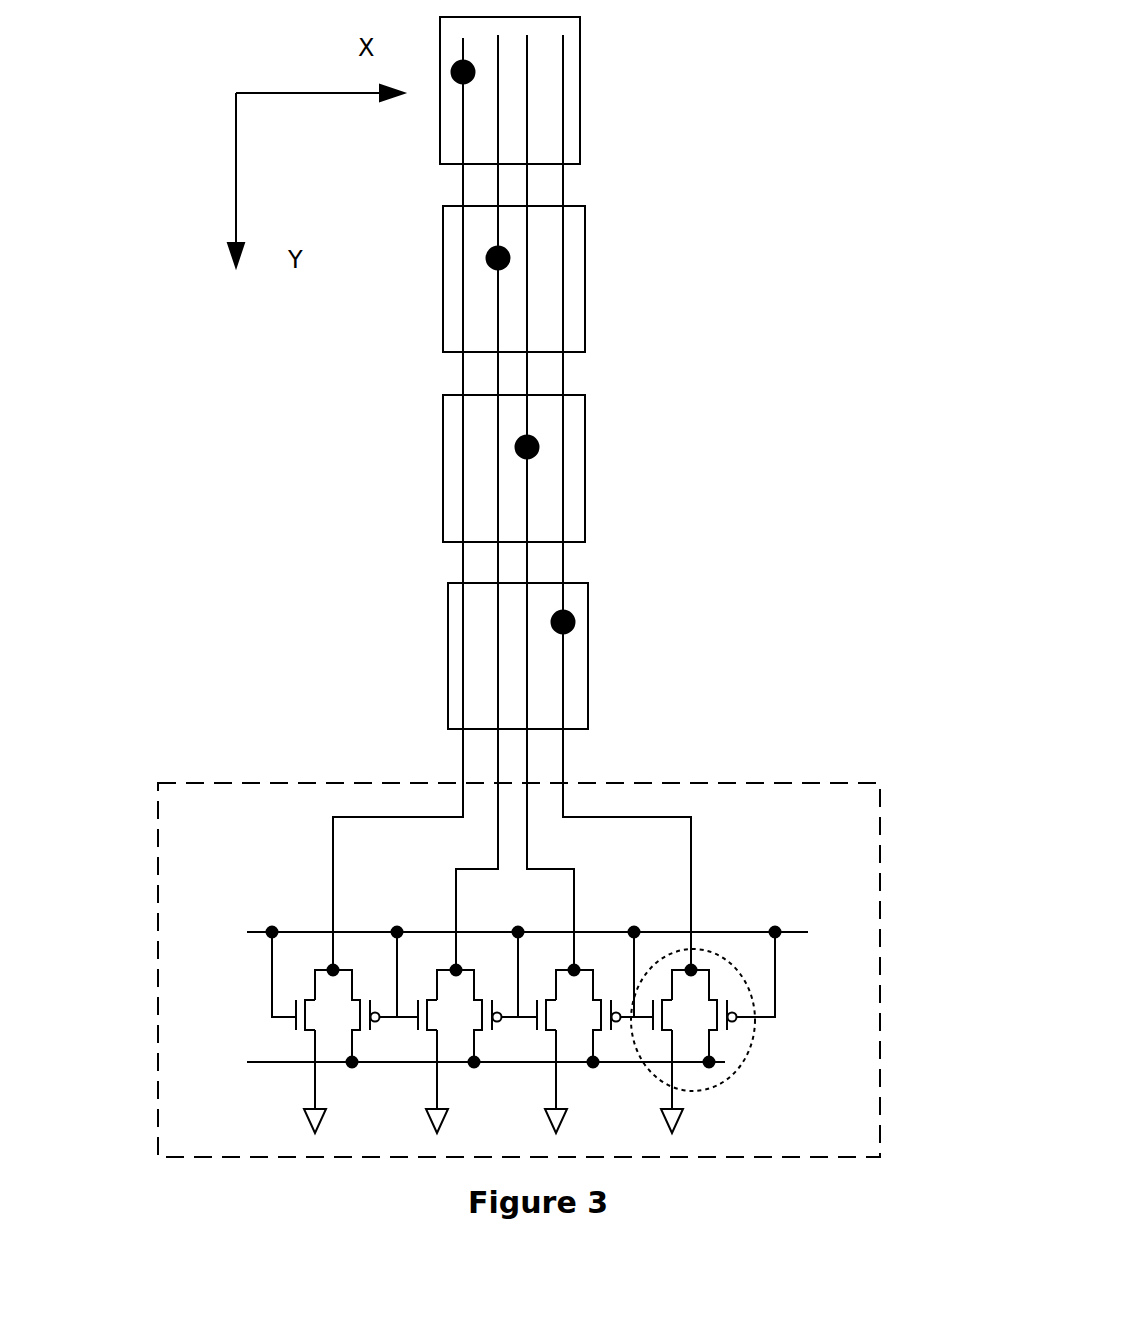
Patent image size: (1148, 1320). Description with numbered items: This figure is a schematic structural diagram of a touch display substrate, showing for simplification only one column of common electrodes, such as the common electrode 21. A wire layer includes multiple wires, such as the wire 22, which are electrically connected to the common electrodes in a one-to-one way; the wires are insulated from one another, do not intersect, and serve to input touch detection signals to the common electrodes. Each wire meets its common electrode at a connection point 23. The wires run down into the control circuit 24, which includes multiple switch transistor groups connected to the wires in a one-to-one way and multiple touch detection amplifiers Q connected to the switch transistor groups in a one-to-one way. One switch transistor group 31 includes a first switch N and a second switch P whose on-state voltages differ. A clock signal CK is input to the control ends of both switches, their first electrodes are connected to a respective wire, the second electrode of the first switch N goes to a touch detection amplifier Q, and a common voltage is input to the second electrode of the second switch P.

The common electrode 21 is at (603, 230).
The wire 22 is at (581, 295).
The connection point 23 is at (598, 635).
The control circuit 24 is at (519, 903).
The switch transistor group 31 is at (767, 1060).